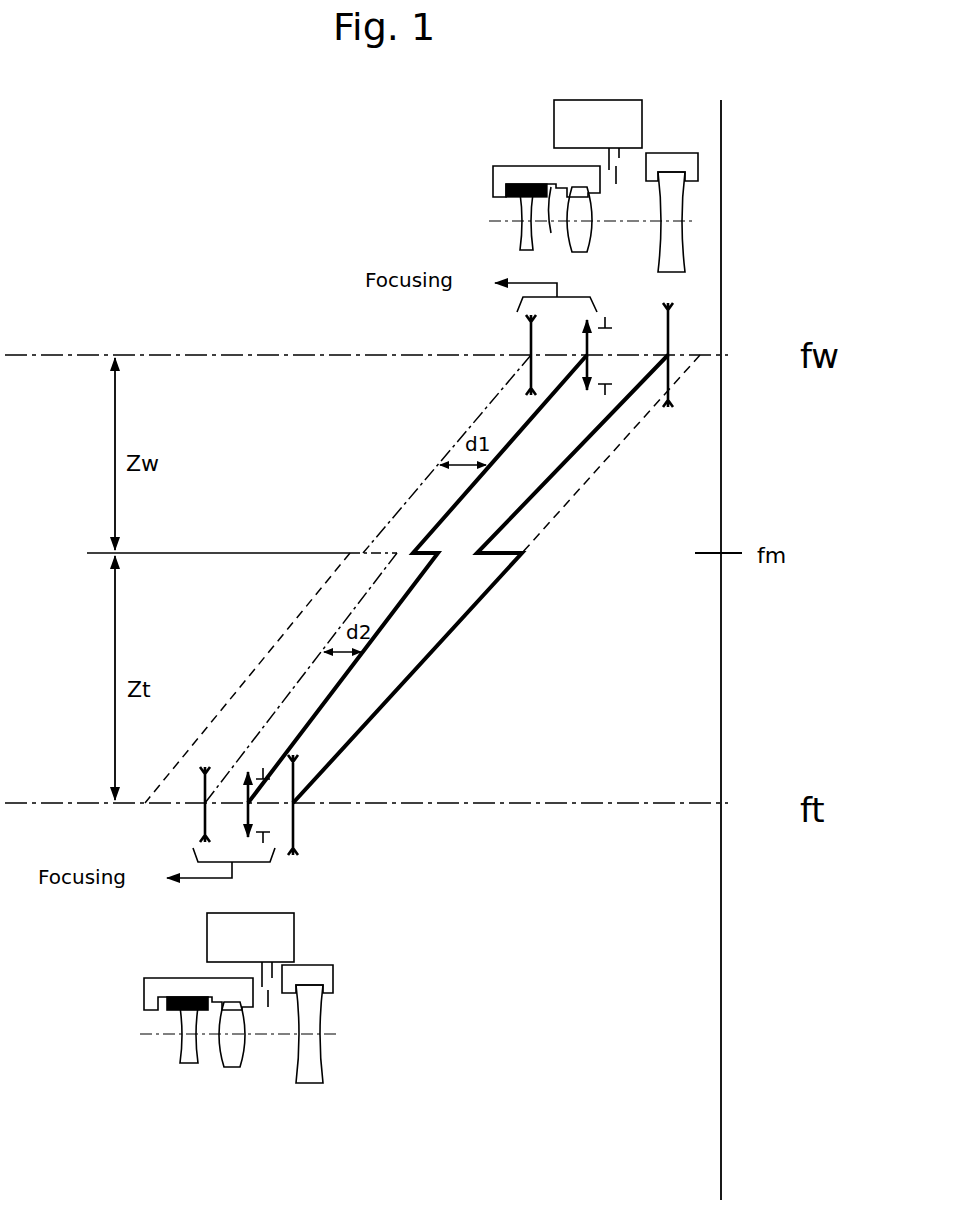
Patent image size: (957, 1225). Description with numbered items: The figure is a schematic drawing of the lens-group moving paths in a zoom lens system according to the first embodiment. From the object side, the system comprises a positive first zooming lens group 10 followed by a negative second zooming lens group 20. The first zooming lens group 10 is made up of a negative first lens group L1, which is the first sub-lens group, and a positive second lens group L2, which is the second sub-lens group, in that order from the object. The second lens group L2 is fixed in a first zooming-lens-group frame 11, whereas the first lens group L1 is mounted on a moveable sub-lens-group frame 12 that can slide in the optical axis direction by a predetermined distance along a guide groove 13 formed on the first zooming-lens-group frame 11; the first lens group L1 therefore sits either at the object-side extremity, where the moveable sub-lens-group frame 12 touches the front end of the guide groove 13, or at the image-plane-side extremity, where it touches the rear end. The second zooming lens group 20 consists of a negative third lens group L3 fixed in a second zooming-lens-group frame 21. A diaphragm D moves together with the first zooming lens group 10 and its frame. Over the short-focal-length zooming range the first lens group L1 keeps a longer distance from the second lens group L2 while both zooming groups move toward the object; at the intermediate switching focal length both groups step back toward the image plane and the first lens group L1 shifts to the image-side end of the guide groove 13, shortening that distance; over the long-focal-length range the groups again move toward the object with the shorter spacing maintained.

The first zooming lens group 10 is at (494, 160).
The first zooming-lens-group frame 11 is at (533, 172).
The moveable sub-lens-group frame 12 is at (506, 192).
The guide groove 13 is at (550, 229).
The second zooming lens group 20 is at (692, 126).
The second zooming-lens-group frame 21 is at (664, 170).
The first lens group L1 is at (525, 235).
The second lens group L2 is at (583, 240).
The third lens group L3 is at (676, 244).
The diaphragm D is at (617, 186).